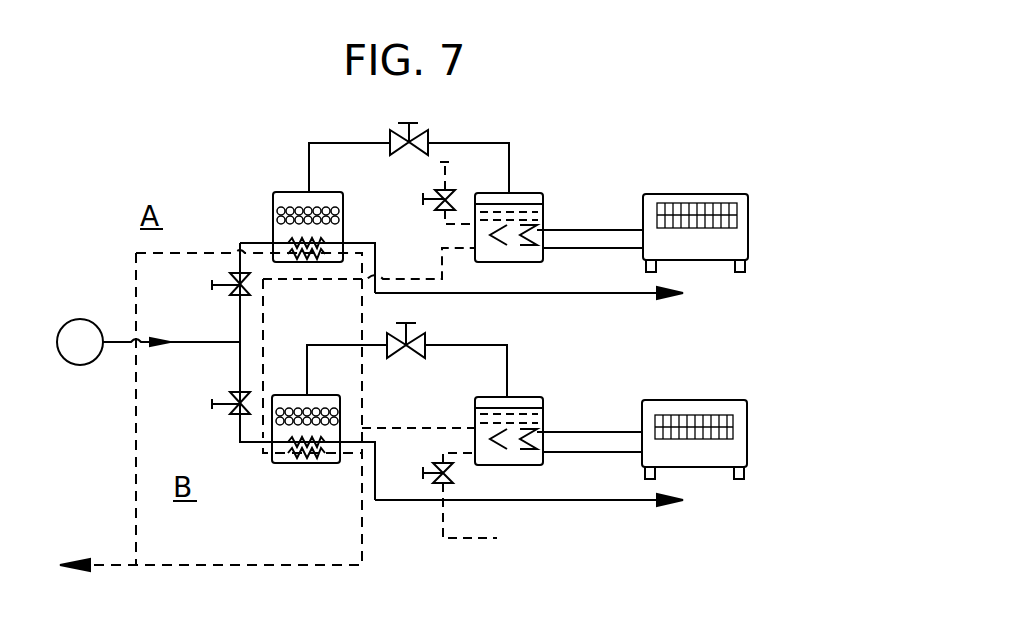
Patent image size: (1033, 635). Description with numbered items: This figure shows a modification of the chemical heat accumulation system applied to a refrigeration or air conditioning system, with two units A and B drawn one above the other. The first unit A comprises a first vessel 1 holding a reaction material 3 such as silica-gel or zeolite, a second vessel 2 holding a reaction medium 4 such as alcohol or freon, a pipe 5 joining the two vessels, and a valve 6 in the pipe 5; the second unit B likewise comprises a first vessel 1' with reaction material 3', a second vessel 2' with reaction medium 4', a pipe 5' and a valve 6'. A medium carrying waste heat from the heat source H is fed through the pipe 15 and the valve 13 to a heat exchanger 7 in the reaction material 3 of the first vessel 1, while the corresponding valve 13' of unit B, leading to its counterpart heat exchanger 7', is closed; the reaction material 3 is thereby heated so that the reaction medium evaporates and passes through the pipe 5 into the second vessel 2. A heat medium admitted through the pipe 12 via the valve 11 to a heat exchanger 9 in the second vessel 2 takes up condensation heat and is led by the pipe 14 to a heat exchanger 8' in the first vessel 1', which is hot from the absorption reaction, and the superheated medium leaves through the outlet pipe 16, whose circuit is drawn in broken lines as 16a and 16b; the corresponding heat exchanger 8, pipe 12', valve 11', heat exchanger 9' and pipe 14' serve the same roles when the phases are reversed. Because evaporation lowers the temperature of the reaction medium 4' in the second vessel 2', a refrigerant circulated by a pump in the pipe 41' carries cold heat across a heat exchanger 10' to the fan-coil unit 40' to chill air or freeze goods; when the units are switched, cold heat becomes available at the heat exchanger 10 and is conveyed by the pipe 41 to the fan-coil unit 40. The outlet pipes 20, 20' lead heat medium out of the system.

The first vessel 1 is at (300, 197).
The reaction material 3 is at (282, 197).
The heat exchanger 7 is at (276, 228).
The heating medium coil 8 is at (306, 282).
The pipe 5 is at (409, 148).
The valve 6 is at (400, 121).
The valve 11 is at (425, 196).
The pipe 12 is at (470, 174).
The second vessel 2 is at (517, 198).
The reaction medium 4 is at (533, 195).
The heat exchanger 9 is at (497, 259).
The heat exchanger 10 is at (551, 259).
The pipe 14 is at (369, 252).
The pipe 41 is at (590, 199).
The fan-coil unit 40 is at (695, 212).
The outlet pipe 20 is at (529, 306).
The valve 13 is at (206, 280).
The pipe 15 is at (207, 344).
The heat source H is at (80, 319).
The outlet pipe 16 is at (115, 567).
The heating medium supply line 16a is at (135, 500).
The heating medium return line 16b is at (200, 567).
The valve 13' is at (203, 408).
The first vessel 1' is at (306, 403).
The reaction material 3' is at (312, 390).
The heating coil 7' is at (288, 470).
The heat exchanger 8' is at (306, 483).
The pipe 5' is at (407, 352).
The valve 6' is at (405, 358).
The valve 11' is at (430, 460).
The pipe 12' is at (442, 517).
The return pipe 14' is at (418, 401).
The second vessel 2' is at (512, 405).
The reaction medium 4' is at (530, 390).
The heat exchanger coil 9' is at (496, 464).
The heat exchanger 10' is at (546, 464).
The pipe 41' is at (589, 415).
The fan-coil unit 40' is at (694, 420).
The outlet pipe 20' is at (529, 521).